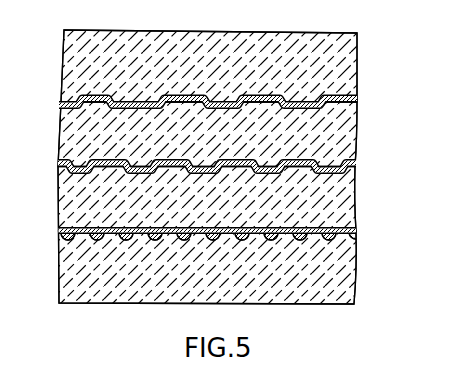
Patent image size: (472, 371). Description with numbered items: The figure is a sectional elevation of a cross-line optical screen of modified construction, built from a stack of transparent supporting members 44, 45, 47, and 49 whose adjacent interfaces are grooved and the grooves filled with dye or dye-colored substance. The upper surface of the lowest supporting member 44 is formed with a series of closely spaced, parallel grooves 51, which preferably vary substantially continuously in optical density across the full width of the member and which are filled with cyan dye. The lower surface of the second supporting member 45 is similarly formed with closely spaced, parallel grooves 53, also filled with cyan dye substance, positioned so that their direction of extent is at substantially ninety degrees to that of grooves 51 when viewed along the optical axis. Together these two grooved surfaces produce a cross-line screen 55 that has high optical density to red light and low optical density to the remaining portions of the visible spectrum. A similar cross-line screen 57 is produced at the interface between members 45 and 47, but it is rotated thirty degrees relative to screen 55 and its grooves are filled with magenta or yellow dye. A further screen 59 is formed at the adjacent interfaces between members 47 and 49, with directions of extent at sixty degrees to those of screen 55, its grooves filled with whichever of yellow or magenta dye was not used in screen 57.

The supporting member 44 is at (340, 280).
The second supporting member 45 is at (343, 208).
The supporting member 47 is at (338, 138).
The supporting member 49 is at (337, 72).
The grooves 51 is at (60, 241).
The grooves 53 is at (65, 232).
The cross-line screen 55 is at (356, 233).
The cross-line screen 57 is at (355, 171).
The cross-line screen 59 is at (356, 100).